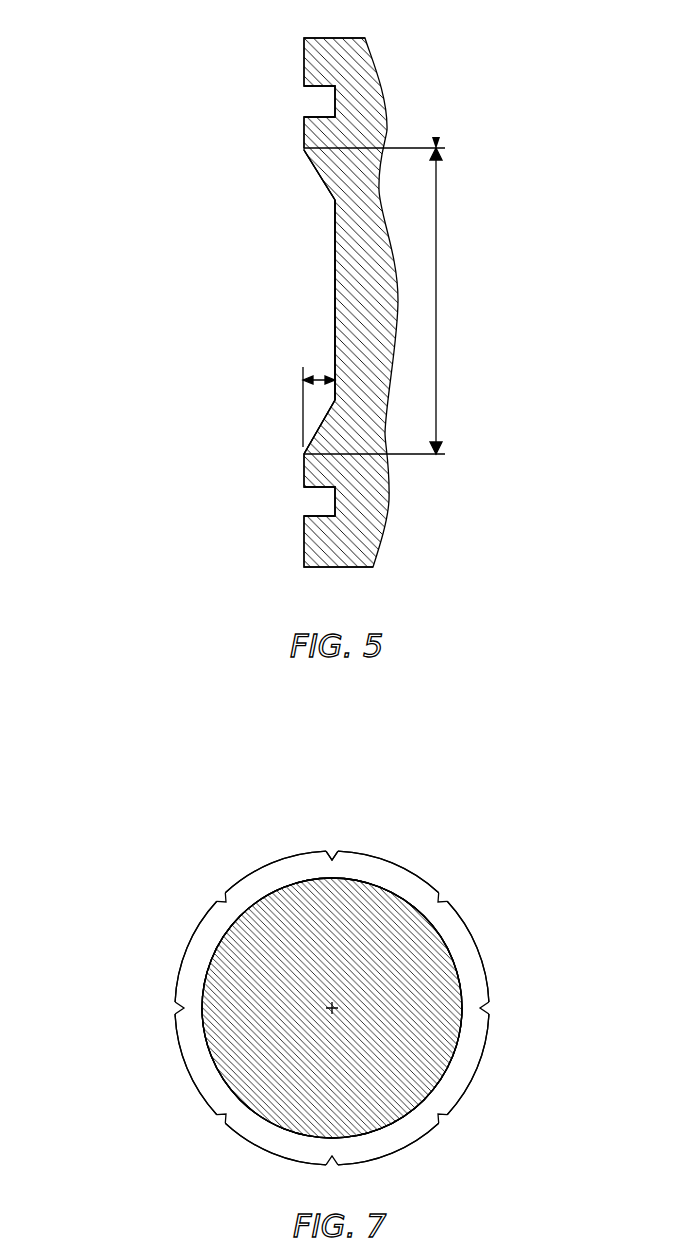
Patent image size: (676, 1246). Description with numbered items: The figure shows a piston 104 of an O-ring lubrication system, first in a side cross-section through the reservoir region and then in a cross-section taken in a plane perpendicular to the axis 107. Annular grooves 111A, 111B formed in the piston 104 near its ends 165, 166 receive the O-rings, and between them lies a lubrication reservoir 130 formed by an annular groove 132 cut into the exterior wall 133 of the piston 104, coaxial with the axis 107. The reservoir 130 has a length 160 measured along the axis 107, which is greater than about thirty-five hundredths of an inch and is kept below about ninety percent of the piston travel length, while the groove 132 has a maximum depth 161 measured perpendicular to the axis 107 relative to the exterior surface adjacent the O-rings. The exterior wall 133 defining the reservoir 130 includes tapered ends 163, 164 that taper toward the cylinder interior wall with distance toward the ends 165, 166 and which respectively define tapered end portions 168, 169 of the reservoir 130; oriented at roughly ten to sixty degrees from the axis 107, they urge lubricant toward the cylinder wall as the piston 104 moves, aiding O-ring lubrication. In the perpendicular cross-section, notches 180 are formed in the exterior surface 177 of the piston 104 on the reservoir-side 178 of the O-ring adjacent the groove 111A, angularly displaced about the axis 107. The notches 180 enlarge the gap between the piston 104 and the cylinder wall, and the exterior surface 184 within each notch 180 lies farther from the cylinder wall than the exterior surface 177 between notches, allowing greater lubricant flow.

In FIG. 5, the piston 104 is at (443, 37).
In FIG. 7, the piston 104 is at (158, 853).
In FIG. 7, the axis 107 is at (332, 1008).
In FIG. 5, the groove 111A is at (320, 102).
In FIG. 5, the groove 111B is at (320, 502).
In FIG. 5, the lubrication reservoir 130 is at (313, 280).
In FIG. 5, the annular groove 132 is at (335, 240).
In FIG. 5, the exterior wall 133 is at (335, 217).
In FIG. 5, the length 160 is at (436, 280).
In FIG. 5, the maximum depth 161 is at (320, 375).
In FIG. 5, the tapered end 163 is at (323, 165).
In FIG. 7, the tapered end 163 is at (192, 953).
In FIG. 5, the tapered end 164 is at (328, 433).
In FIG. 5, the end 165 is at (332, 43).
In FIG. 5, the end 166 is at (343, 567).
In FIG. 5, the tapered end portion 168 is at (313, 183).
In FIG. 5, the tapered end portion 169 is at (317, 414).
In FIG. 7, the exterior surface 177 is at (410, 868).
In FIG. 7, the reservoir-side 178 is at (268, 875).
In FIG. 7, the notches 180 is at (223, 898).
In FIG. 7, the exterior surface 184 is at (332, 858).